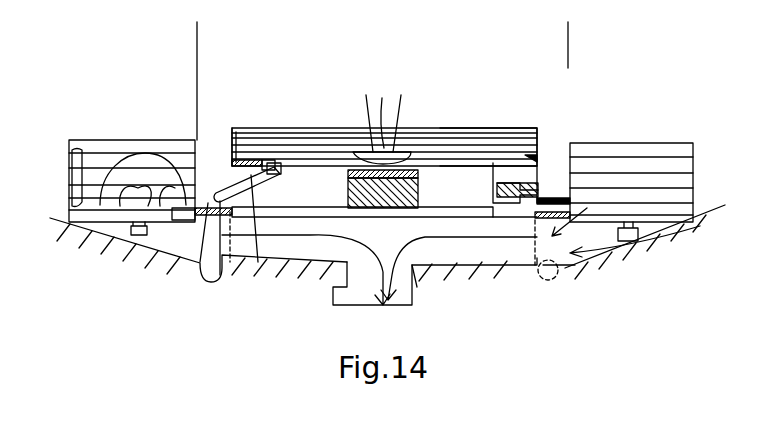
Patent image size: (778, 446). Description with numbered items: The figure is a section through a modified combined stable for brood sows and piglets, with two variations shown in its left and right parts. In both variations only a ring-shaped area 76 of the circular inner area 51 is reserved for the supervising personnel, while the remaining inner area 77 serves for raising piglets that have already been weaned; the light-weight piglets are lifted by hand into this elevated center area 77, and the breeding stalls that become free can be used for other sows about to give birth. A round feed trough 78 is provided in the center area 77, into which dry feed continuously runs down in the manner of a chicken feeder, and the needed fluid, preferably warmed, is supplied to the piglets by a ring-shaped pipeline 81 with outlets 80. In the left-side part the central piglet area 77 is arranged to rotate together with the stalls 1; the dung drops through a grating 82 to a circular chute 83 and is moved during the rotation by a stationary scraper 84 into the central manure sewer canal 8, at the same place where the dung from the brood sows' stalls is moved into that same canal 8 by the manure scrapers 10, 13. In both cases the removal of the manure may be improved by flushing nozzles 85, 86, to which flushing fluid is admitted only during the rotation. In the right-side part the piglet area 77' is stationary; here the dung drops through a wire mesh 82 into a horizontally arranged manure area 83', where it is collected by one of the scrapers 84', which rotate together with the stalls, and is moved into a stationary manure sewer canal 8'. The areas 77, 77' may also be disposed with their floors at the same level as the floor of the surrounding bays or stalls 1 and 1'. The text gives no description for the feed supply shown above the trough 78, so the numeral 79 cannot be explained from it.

The stall 1 is at (132, 156).
The stall 1' is at (631, 155).
The manure sewer canal 8 is at (293, 299).
The stationary manure sewer canal 8' is at (630, 261).
The stationary scraper 10 is at (143, 281).
The rotating horizontal brush 13 is at (143, 281).
The flushing nozzle 85 is at (177, 221).
The circular inner area 51 is at (568, 35).
The ring-shaped area 76 is at (552, 170).
The central piglet area 77 is at (384, 106).
The piglet area 77' is at (488, 110).
The round feed trough 78 is at (408, 153).
The nozzle 79 is at (384, 111).
The outlet 80 is at (237, 152).
The ring-shaped pipeline 81 is at (236, 152).
The grating 82 is at (274, 163).
The circular chute 83 is at (254, 263).
The horizontally arranged manure area 83' is at (521, 274).
The stationary scraper 84 is at (227, 261).
The scraper 84' is at (505, 258).
The flushing nozzle 86 is at (266, 160).